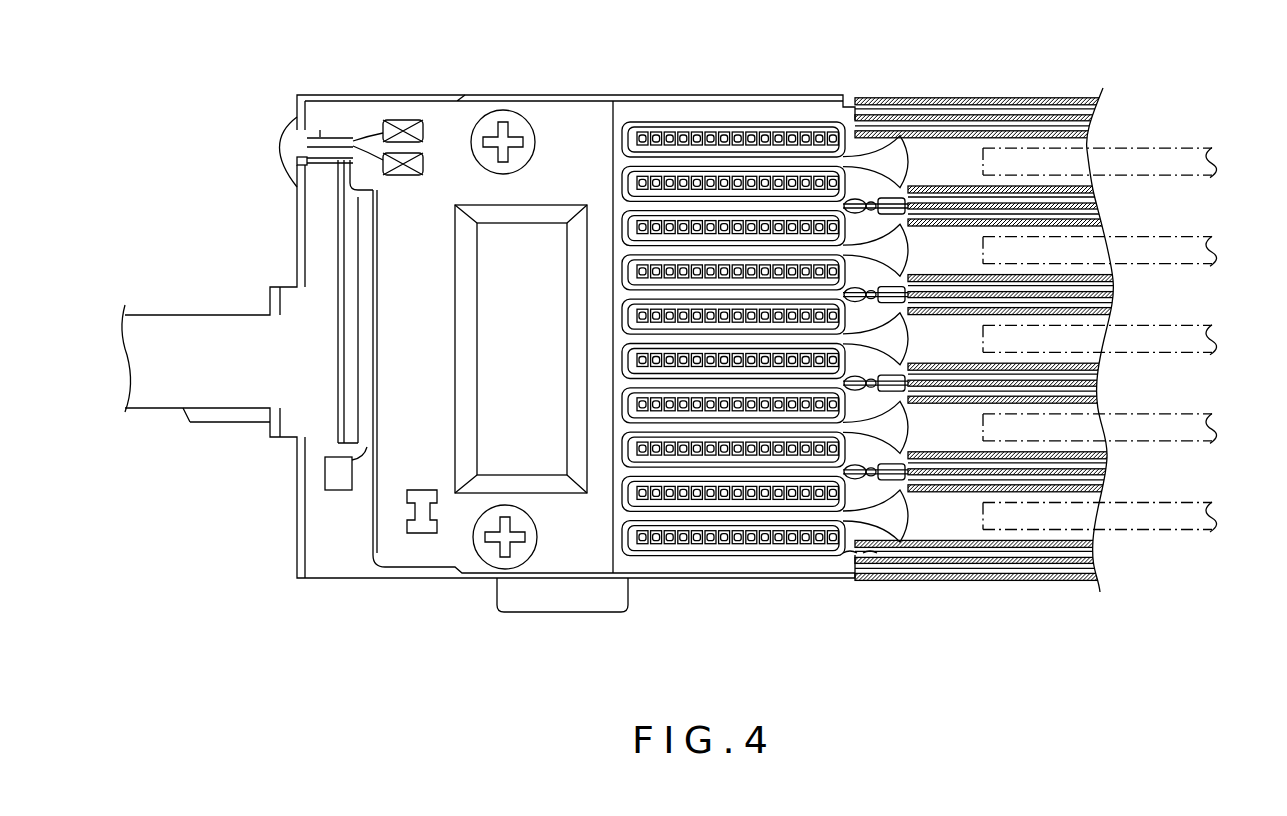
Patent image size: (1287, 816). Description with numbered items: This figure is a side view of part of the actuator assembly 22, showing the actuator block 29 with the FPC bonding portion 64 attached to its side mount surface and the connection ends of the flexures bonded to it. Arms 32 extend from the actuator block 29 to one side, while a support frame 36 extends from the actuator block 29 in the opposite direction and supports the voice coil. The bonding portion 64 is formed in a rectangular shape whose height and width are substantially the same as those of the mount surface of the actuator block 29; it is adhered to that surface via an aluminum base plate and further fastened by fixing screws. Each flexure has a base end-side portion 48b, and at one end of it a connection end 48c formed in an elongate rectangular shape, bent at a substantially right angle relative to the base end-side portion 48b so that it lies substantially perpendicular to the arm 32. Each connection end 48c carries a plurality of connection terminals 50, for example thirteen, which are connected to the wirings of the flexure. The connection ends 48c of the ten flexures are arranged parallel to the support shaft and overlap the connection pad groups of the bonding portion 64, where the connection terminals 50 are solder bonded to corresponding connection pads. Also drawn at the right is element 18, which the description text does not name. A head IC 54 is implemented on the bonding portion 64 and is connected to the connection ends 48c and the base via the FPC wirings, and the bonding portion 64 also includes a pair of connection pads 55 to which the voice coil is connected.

The cable 18 is at (1216, 215).
The actuator assembly 22 is at (905, 75).
The actuator block 29 is at (360, 103).
The arm 32 is at (1035, 103).
The support frame 36 is at (164, 340).
The base end-side portion 48b is at (1062, 122).
The connection end 48c is at (622, 184).
The connection terminal 50 is at (697, 133).
The head IC 54 is at (477, 375).
The connection pad 55 is at (436, 158).
The bonding portion 64 is at (562, 117).